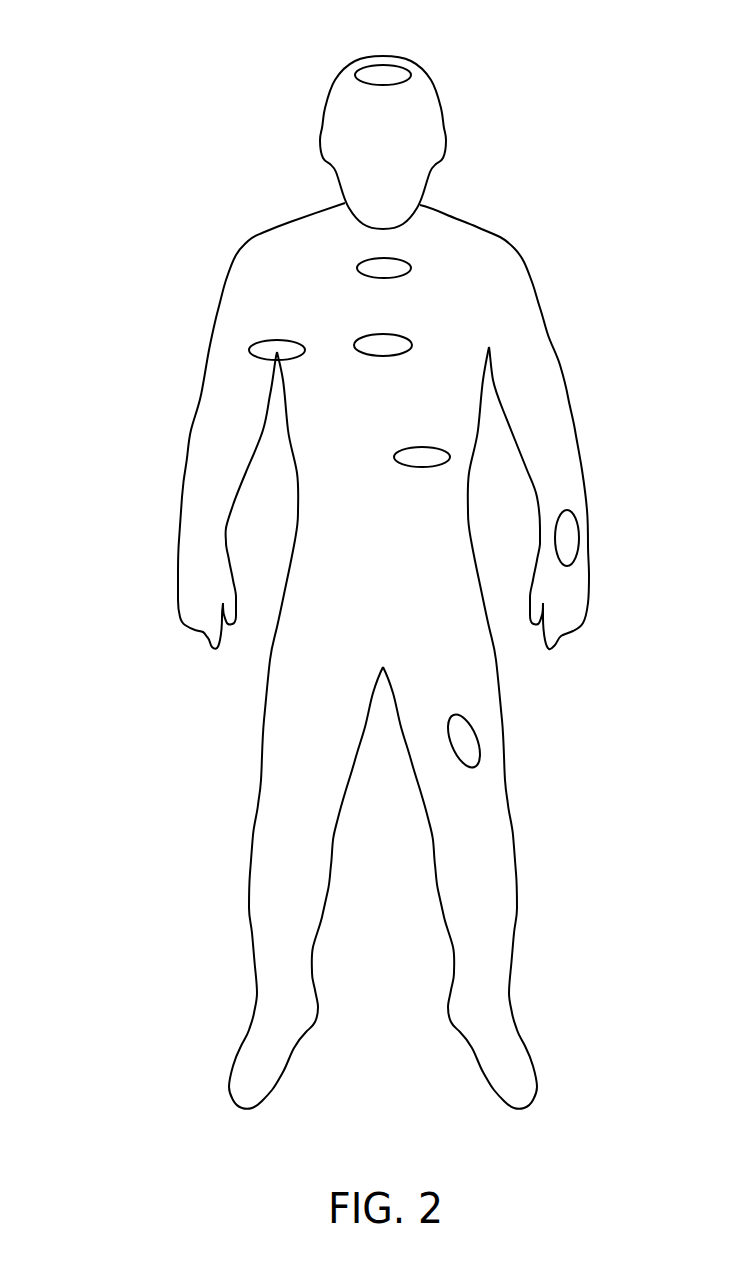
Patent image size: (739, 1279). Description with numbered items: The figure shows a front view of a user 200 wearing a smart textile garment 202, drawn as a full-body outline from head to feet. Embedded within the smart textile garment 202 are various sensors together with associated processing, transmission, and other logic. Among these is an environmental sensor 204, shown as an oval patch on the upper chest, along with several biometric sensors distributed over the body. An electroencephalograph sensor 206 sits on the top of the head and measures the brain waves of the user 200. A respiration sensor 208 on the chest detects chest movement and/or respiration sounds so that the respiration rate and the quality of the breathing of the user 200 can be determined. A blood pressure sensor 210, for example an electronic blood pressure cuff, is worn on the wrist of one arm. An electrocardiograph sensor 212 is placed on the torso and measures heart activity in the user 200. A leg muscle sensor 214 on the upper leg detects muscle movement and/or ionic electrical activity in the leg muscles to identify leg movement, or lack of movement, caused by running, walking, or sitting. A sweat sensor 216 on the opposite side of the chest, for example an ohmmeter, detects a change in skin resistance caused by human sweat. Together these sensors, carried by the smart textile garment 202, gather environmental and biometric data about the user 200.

The user 200 is at (359, 559).
The smart textile garment 202 is at (311, 582).
The environmental sensor 204 is at (411, 268).
The electroencephalograph (EEG) sensor 206 is at (383, 65).
The respiration sensor 208 is at (383, 334).
The blood pressure sensor 210 is at (579, 540).
The electrocardiograph (ECG/EKG) sensor 212 is at (422, 447).
The leg muscle sensor 214 is at (458, 714).
The sweat sensor 216 is at (277, 340).